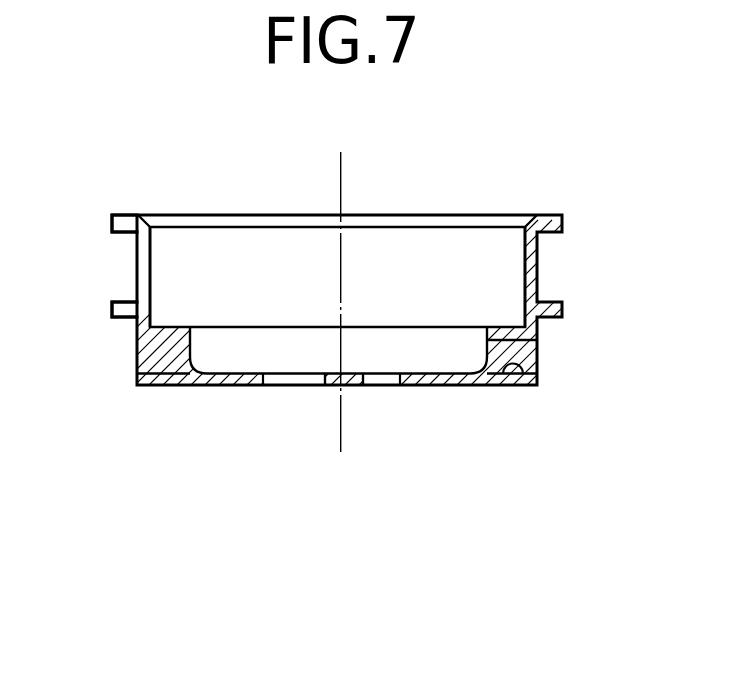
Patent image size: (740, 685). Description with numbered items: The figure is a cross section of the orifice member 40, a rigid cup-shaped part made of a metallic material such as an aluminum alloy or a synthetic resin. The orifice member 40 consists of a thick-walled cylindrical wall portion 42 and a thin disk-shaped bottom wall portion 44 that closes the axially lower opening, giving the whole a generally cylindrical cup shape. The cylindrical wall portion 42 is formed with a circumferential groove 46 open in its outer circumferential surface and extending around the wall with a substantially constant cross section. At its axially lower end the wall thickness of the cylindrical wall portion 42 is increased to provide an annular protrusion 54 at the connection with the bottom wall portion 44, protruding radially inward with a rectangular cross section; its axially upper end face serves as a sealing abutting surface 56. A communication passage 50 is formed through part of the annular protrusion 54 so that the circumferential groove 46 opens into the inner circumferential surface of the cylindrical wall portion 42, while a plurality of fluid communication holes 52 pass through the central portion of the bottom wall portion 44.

The orifice member 40 is at (530, 178).
The cylindrical wall portion 42 is at (530, 270).
The bottom wall portion 44 is at (333, 386).
The circumferential groove 46 is at (137, 278).
The communication passage 50 is at (522, 374).
The fluid communication holes 52 is at (278, 386).
The annular protrusion 54 is at (167, 337).
The sealing abutting surface 56 is at (500, 327).